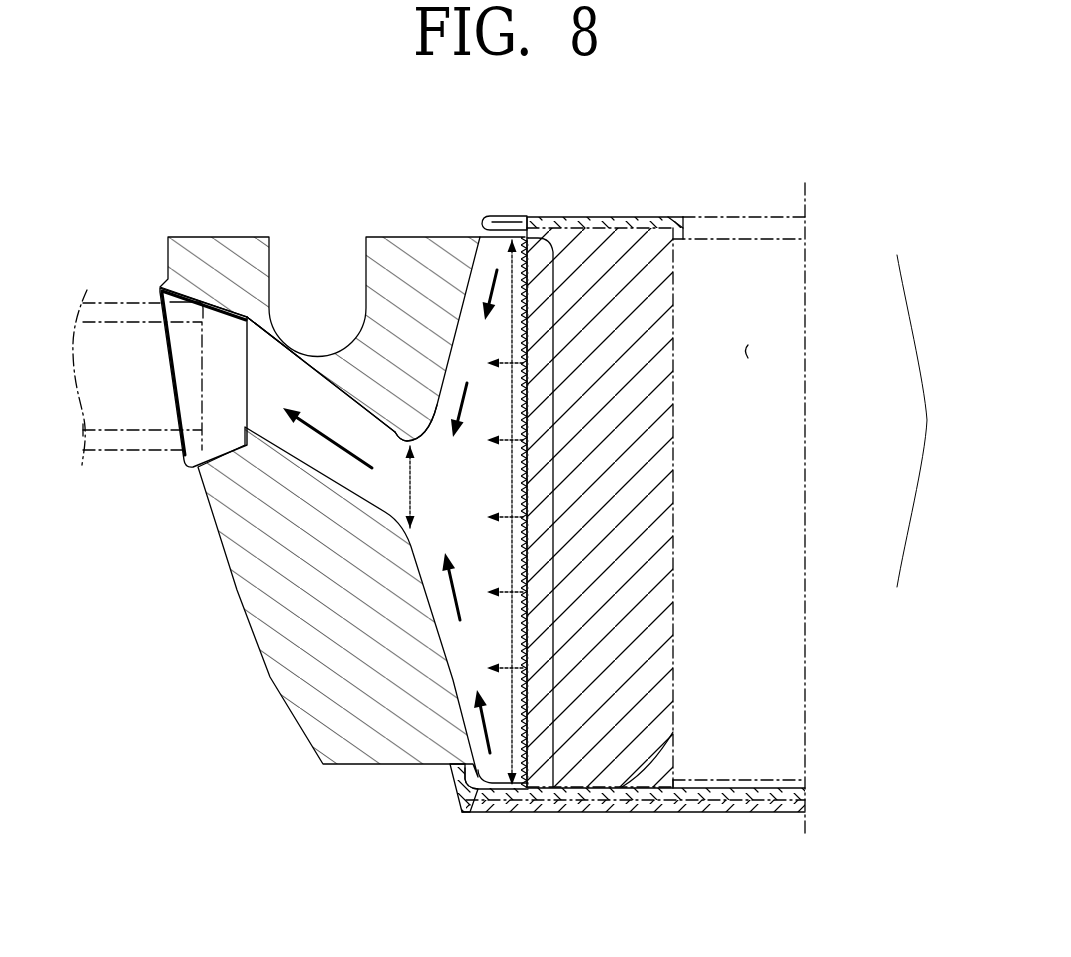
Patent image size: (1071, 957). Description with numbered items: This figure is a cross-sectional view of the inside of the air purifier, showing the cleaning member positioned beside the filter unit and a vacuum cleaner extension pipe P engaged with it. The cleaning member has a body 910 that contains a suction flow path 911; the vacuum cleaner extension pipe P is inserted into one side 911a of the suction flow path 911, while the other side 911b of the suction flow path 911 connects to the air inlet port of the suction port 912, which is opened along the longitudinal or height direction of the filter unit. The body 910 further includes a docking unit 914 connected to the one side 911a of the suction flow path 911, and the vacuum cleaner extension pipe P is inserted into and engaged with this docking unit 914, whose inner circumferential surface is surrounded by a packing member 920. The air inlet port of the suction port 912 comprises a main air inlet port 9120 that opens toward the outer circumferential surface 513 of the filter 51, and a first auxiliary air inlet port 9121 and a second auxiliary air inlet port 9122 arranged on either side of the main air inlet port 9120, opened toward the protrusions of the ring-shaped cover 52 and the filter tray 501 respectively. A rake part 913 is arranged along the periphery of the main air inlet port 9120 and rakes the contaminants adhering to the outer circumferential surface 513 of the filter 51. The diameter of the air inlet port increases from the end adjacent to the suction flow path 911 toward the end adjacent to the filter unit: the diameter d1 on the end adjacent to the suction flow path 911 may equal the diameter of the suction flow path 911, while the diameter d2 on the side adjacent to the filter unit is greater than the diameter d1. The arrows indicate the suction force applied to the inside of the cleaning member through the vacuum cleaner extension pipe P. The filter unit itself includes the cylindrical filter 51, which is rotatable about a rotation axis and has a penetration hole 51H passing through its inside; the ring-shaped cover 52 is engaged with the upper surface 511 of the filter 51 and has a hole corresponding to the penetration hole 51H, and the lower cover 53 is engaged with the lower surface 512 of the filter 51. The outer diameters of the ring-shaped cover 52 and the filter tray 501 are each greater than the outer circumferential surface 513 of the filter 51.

The vacuum cleaner extension pipe P is at (108, 300).
The body 910 is at (253, 237).
The suction flow path 911 is at (360, 408).
The one side of the suction flow path 911a is at (247, 360).
The other side of the suction flow path 911b is at (405, 442).
The docking unit 914 is at (205, 302).
The packing member 920 is at (161, 287).
The suction port 912 is at (462, 232).
The first auxiliary air inlet port 9121 is at (497, 220).
The second auxiliary air inlet port 9122 is at (523, 789).
The ring-shaped cover 52 is at (630, 218).
The rake part 913 is at (542, 318).
The main air inlet port 9120 is at (553, 470).
The upper surface of the filter 511 is at (640, 249).
The penetration hole 51H is at (748, 350).
The outer circumferential surface of the filter 513 is at (657, 437).
The filter 51 is at (898, 424).
The lower surface of the filter 512 is at (657, 768).
The lower cover 53 is at (793, 794).
The filter tray 501 is at (623, 813).
The diameter on one end of the air inlet port d1 is at (398, 487).
The diameter on the other side of the air inlet port d2 is at (501, 512).